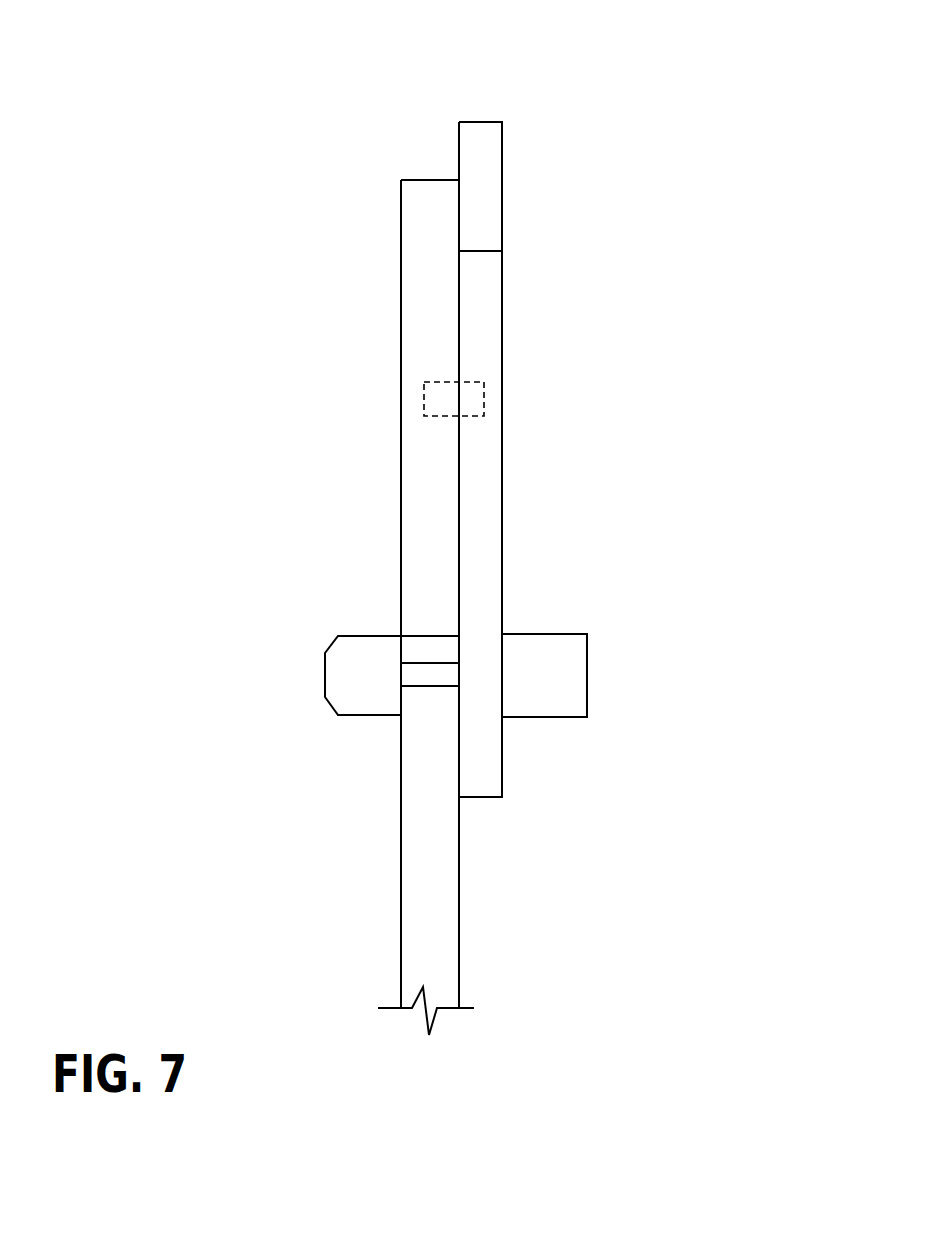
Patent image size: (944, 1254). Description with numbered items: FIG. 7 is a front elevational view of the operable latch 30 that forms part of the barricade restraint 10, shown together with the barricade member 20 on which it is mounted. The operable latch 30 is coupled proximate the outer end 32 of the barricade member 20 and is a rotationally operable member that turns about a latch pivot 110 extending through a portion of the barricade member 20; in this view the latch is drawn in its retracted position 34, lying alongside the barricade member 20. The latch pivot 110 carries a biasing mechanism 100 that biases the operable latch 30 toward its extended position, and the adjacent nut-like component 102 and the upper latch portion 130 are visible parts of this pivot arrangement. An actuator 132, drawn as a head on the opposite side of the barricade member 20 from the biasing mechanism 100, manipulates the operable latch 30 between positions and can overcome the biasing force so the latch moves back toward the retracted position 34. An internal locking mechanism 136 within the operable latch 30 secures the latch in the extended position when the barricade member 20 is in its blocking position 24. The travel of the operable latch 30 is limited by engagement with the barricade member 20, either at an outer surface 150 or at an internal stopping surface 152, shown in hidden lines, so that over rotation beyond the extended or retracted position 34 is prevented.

The barricade restraint 10 is at (236, 551).
The barricade member 20 is at (423, 818).
The blocking position 24 is at (358, 273).
The operable latch 30 is at (518, 211).
The outer end 32 is at (425, 490).
The retracted position 34 is at (520, 314).
The biasing mechanism 100 is at (527, 624).
The nut 102 is at (568, 703).
The latch pivot 110 is at (450, 676).
The rail upper end 130 is at (480, 122).
The actuator 132 is at (345, 682).
The internal locking mechanism 136 is at (384, 631).
The outer surface 150 is at (420, 932).
The internal stopping surface 152 is at (424, 398).